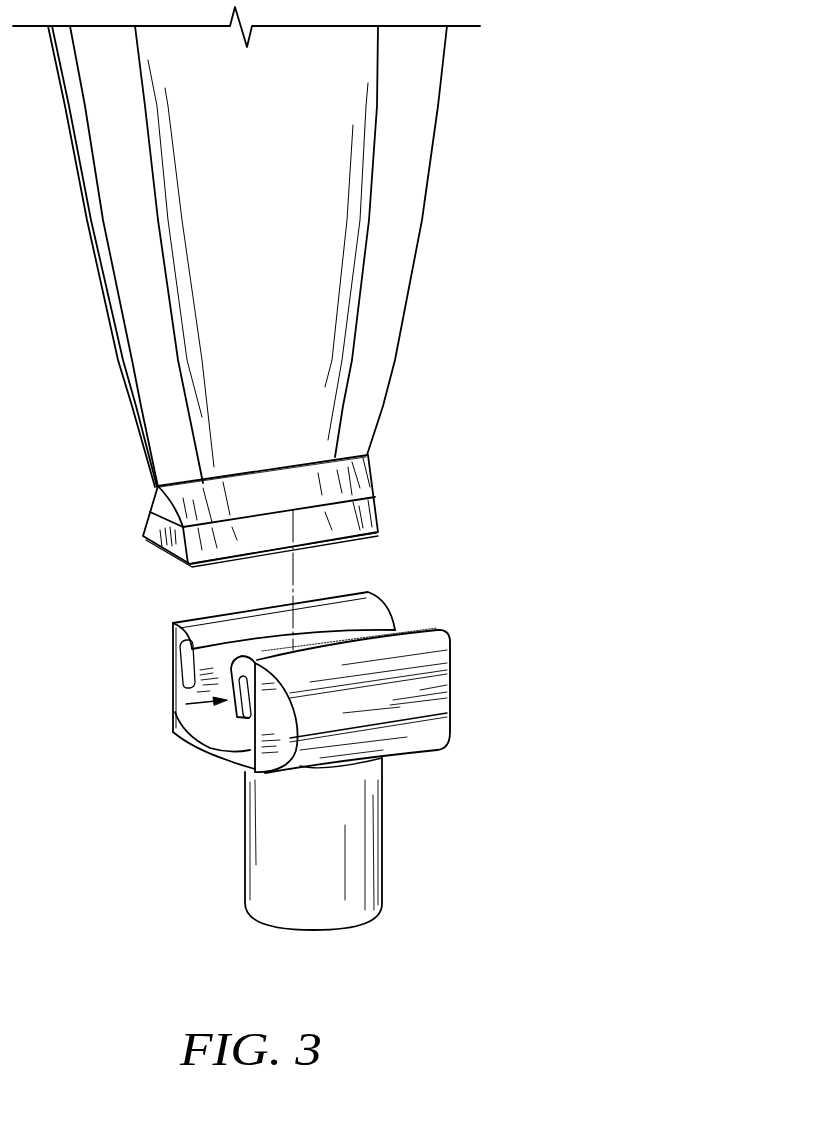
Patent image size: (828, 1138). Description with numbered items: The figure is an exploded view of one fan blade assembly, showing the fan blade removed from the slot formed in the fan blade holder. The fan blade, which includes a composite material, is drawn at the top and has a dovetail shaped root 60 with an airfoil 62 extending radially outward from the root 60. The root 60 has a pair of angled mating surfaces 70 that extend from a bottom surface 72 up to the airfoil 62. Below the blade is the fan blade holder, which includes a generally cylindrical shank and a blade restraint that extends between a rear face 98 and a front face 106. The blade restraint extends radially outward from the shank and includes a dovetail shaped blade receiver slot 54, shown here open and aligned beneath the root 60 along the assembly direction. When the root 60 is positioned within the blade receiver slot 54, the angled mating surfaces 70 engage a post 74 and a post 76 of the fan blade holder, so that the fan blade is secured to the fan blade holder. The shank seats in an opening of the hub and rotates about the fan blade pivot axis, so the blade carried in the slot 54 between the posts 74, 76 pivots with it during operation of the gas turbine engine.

The airfoil 62 is at (397, 248).
The root 60 is at (362, 462).
The angled mating surfaces 70 is at (347, 490).
The bottom surface 72 is at (357, 542).
The post 74 is at (382, 625).
The post 76 is at (438, 712).
The rear face 98 is at (450, 652).
The blade receiver slot 54 is at (178, 704).
The front face 106 is at (222, 748).